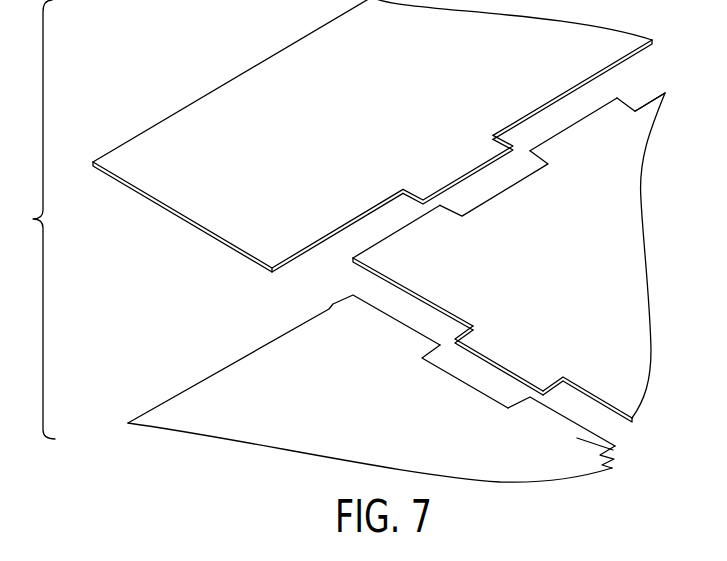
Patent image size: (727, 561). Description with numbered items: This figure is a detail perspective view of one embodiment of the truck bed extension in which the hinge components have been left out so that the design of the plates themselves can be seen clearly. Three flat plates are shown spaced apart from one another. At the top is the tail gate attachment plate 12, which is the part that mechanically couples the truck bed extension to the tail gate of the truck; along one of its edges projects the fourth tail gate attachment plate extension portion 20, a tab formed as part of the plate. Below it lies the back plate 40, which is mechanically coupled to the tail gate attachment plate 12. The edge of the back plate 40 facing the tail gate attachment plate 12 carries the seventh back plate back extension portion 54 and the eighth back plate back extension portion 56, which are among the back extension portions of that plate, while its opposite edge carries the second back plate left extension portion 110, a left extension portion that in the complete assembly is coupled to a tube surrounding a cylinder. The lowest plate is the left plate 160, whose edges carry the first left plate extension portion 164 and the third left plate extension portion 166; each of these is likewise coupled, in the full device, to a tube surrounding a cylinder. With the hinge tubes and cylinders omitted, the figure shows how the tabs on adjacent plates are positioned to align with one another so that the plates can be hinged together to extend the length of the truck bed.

The tail gate attachment plate 12 is at (270, 80).
The fourth tail gate attachment plate extension portion 20 is at (463, 162).
The back plate 40 is at (543, 266).
The seventh back plate back extension portion 54 is at (622, 115).
The eighth back plate back extension portion 56 is at (407, 235).
The second back plate left extension portion 110 is at (522, 363).
The left plate 160 is at (368, 406).
The first left plate extension portion 164 is at (392, 330).
The third left plate extension portion 166 is at (613, 450).